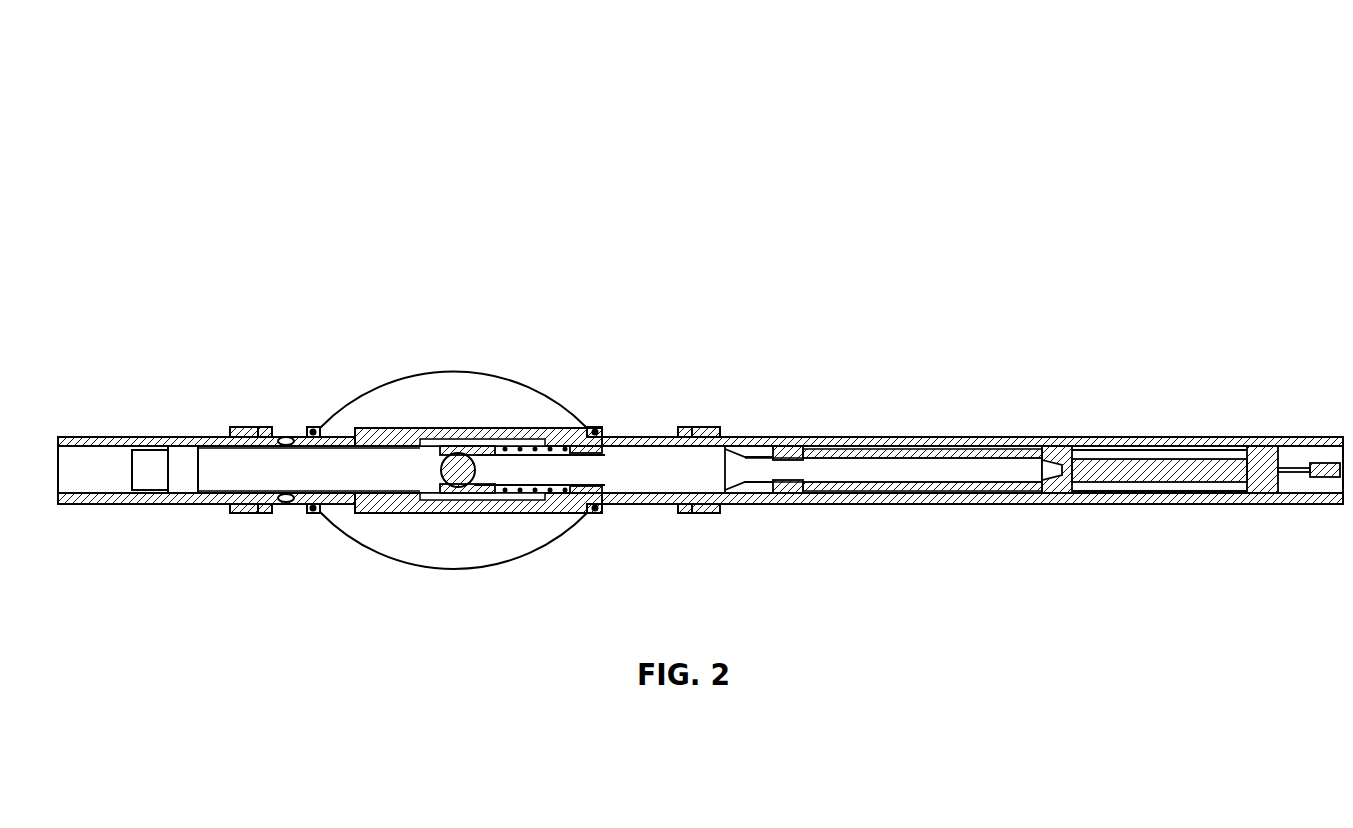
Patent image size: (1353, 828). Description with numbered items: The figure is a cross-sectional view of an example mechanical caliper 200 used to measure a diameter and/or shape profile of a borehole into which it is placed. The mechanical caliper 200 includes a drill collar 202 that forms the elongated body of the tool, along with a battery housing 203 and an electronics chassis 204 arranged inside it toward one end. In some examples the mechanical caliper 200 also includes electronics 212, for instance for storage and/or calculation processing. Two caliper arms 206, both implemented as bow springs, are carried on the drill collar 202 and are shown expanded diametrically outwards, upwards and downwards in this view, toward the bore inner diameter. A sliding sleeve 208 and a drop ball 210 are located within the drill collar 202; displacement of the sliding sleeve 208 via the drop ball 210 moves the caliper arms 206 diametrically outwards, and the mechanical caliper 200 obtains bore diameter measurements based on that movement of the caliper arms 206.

The mechanical caliper 200 is at (1141, 94).
The drill collar 202 is at (632, 497).
The battery housing 203 is at (1147, 465).
The electronics chassis 204 is at (782, 490).
The caliper arms 206 is at (418, 375).
The sliding sleeve 208 is at (476, 447).
The drop ball 210 is at (460, 477).
The electronics 212 is at (930, 490).